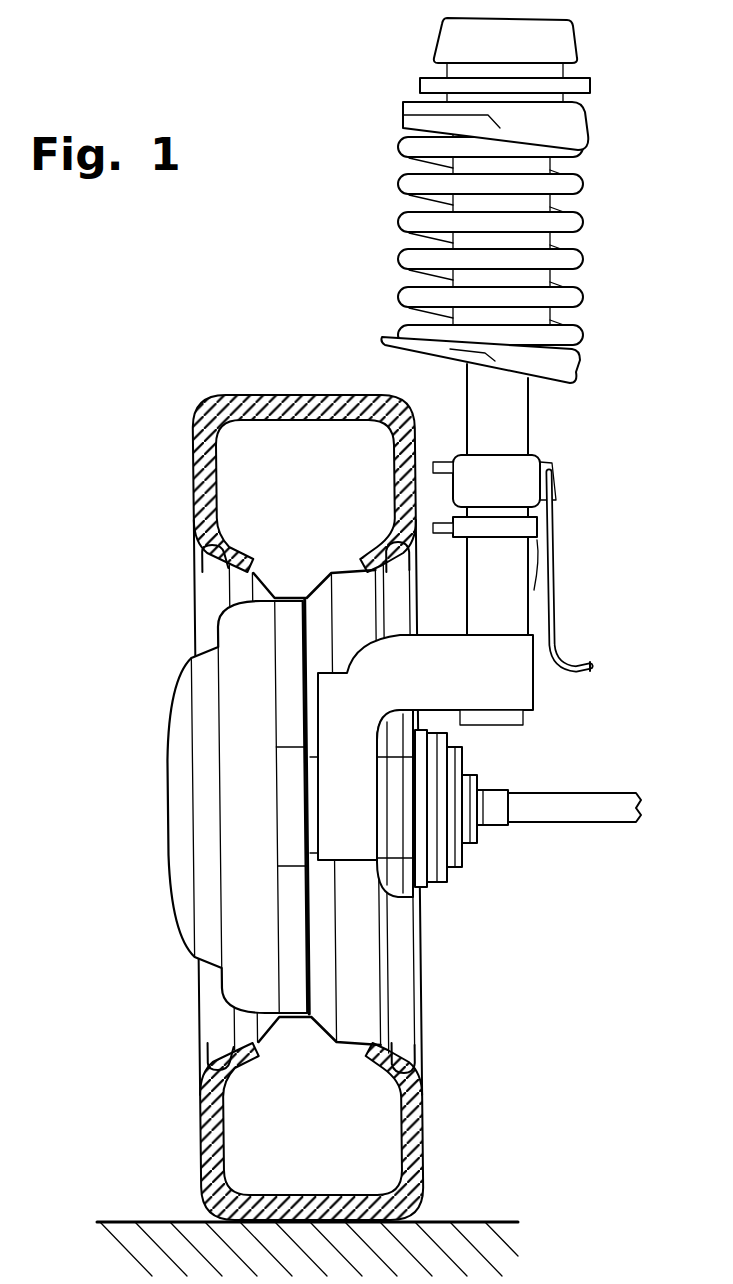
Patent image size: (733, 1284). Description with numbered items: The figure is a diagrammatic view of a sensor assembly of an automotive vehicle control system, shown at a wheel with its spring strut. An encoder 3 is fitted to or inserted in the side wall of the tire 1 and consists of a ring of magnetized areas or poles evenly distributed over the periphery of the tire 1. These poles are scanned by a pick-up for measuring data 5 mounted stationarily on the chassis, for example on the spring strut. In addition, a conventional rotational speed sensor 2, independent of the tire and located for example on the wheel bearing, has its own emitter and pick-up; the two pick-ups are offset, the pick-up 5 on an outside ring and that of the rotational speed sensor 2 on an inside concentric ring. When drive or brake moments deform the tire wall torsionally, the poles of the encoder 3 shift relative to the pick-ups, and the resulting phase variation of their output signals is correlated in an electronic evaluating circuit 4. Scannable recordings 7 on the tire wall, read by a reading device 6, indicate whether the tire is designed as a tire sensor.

The tire 1 is at (203, 490).
The rotational speed sensor 2 is at (292, 808).
The encoder 3 is at (417, 458).
The electronic evaluating circuit 4 is at (508, 480).
The pick-up for measuring data 5 is at (450, 457).
The reading device 6 is at (517, 532).
The scannable recordings 7 is at (417, 540).